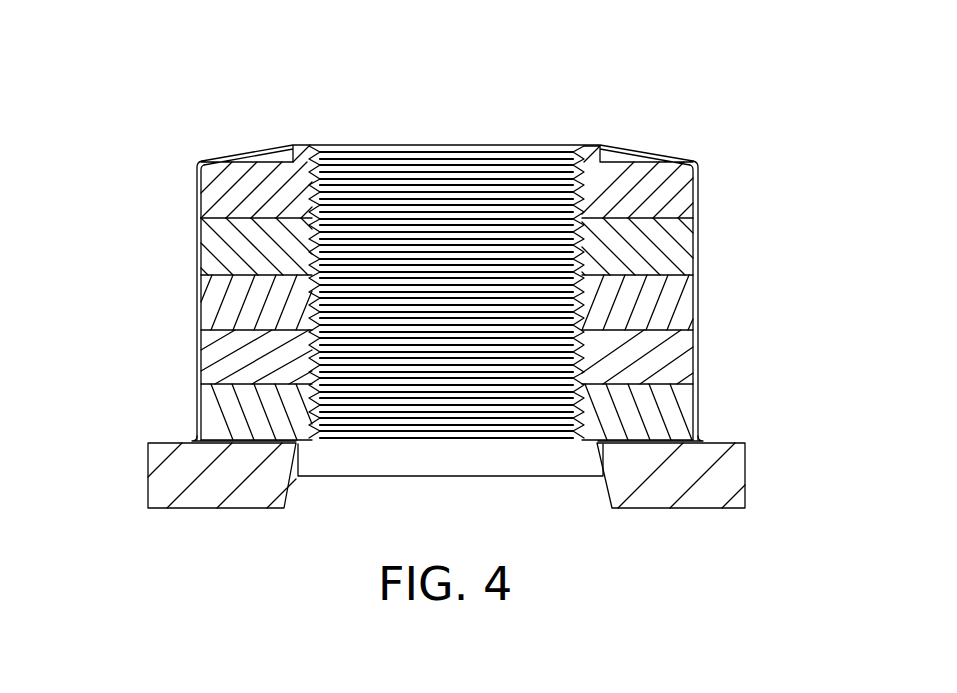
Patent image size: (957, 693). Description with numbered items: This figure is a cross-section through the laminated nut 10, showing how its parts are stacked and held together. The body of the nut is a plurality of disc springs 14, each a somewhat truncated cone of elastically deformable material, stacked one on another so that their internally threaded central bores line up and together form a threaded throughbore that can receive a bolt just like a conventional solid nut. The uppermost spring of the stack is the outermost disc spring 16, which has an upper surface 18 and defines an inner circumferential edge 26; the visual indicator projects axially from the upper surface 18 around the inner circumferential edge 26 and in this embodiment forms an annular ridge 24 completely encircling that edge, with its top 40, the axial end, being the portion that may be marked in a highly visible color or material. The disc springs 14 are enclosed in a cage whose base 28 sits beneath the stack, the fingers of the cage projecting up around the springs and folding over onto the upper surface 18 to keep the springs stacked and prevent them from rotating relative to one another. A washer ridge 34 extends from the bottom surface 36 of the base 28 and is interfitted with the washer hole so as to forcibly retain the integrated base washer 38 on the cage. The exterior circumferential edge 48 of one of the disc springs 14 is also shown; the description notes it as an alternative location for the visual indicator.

The laminated nut 10 is at (788, 189).
The disc springs 14 is at (212, 238).
The outermost disc spring 16 is at (262, 193).
The upper surface 18 is at (623, 158).
The annular ridge 24 is at (303, 155).
The inner circumferential edge 26 is at (575, 150).
The base 28 is at (705, 441).
The washer ridge 34 is at (603, 477).
The bottom surface 36 is at (195, 440).
The base washer 38 is at (680, 490).
The top 40 is at (597, 145).
The exterior circumferential edge 48 is at (197, 316).